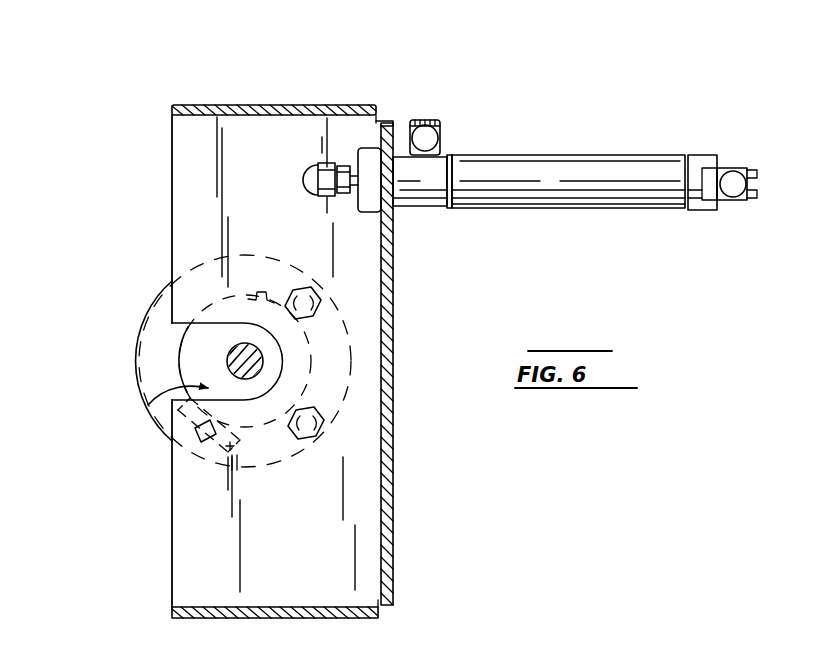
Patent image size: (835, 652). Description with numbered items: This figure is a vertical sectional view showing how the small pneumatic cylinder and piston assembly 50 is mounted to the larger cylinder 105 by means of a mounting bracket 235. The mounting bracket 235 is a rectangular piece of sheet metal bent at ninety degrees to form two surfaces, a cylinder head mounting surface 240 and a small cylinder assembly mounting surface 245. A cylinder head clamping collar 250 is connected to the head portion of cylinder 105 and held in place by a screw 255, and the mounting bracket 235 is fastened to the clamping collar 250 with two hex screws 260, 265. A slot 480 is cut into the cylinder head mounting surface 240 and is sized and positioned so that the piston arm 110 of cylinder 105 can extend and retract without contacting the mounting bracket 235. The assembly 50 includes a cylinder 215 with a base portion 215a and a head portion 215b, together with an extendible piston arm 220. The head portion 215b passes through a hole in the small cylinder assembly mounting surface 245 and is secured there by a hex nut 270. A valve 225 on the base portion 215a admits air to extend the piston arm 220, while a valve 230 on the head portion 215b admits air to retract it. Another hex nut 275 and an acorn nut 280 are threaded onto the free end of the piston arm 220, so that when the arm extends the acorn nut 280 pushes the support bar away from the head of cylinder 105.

The cylinder and piston assembly 50 is at (604, 152).
The cylinder 105 is at (195, 340).
The piston arm 110 is at (228, 356).
The cylinder 215 is at (540, 187).
The base portion 215a is at (680, 208).
The head portion 215b is at (412, 187).
The piston arm 220 is at (358, 158).
The valve 225 is at (736, 186).
The valve 230 is at (432, 140).
The mounting bracket 235 is at (402, 548).
The cylinder head mounting surface 240 is at (368, 527).
The small cylinder assembly mounting surface 245 is at (388, 478).
The cylinder head clamping collar 250 is at (152, 377).
The screw 255 is at (172, 440).
The hex screw 260 is at (322, 418).
The hex screw 265 is at (321, 303).
The hex nut 270 is at (380, 123).
The hex nut 275 is at (344, 164).
The acorn nut 280 is at (316, 162).
The slot 480 is at (158, 403).